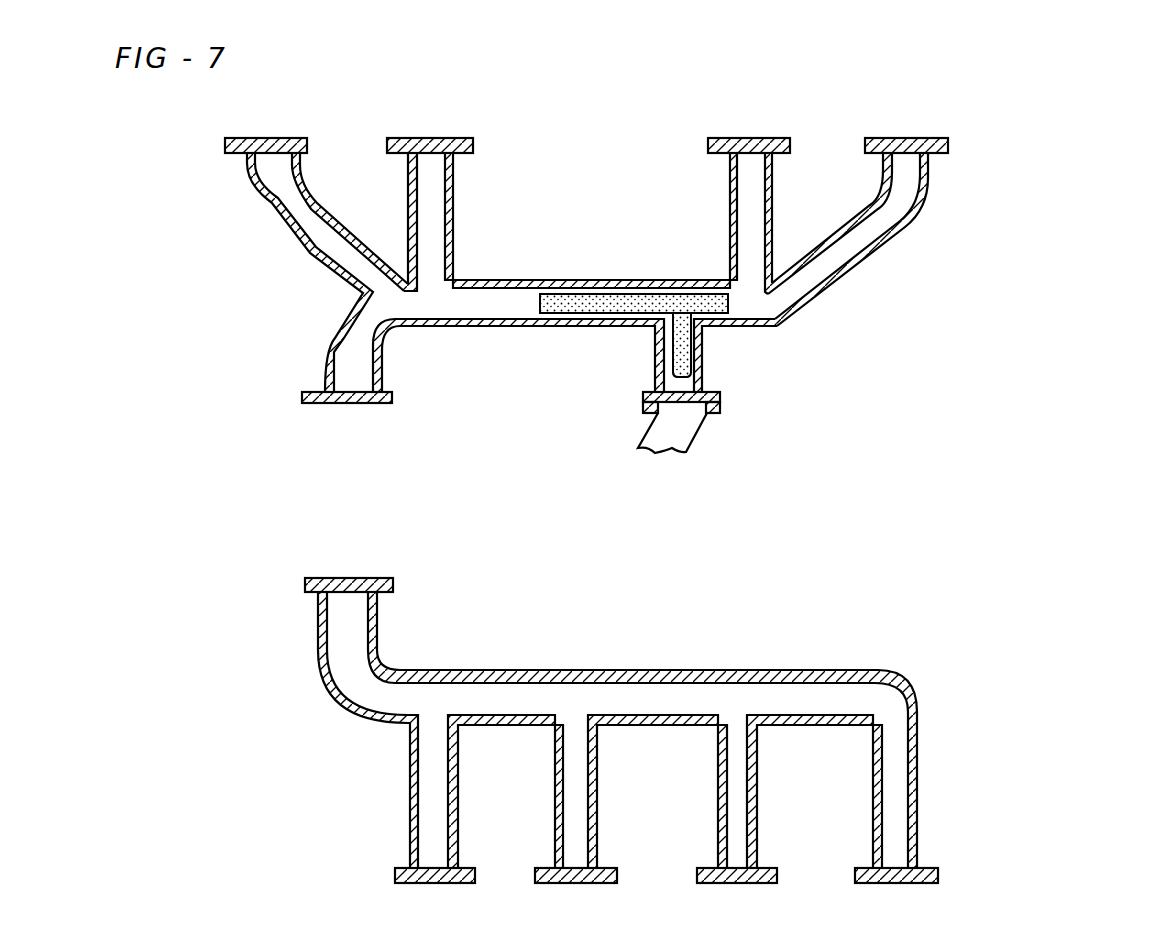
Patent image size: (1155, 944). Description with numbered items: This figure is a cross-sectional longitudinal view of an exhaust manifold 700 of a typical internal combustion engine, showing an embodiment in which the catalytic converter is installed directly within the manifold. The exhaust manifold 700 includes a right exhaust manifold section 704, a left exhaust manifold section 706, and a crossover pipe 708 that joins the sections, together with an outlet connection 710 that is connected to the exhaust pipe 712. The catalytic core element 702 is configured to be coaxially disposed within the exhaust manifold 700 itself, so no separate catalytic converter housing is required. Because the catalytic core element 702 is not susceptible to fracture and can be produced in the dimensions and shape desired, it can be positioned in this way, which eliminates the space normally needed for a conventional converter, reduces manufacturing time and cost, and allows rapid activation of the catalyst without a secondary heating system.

The exhaust manifold 700 is at (987, 150).
The catalytic core element 702 is at (581, 294).
The right exhaust manifold section 704 is at (897, 223).
The left exhaust manifold section 706 is at (907, 690).
The crossover pipe 708 is at (325, 343).
The outlet connection 710 is at (702, 358).
The exhaust pipe 712 is at (694, 438).